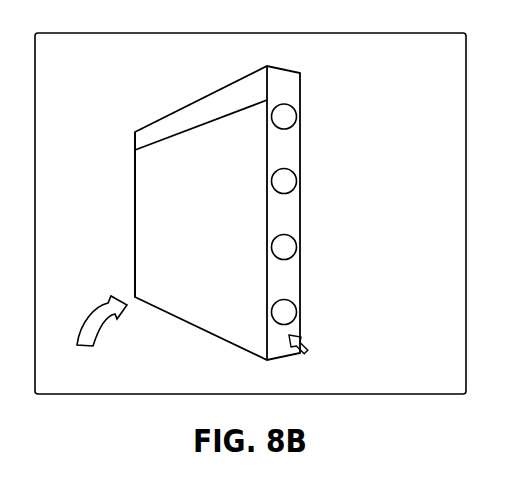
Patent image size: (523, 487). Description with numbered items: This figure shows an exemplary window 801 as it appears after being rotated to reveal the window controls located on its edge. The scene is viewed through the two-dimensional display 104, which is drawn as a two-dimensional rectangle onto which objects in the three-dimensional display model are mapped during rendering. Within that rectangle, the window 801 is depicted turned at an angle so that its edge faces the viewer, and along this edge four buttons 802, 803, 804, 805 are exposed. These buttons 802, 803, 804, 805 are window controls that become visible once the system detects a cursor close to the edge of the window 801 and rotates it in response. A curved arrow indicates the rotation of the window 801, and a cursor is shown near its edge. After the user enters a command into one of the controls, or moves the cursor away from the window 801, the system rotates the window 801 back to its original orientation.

The 2D display 104 is at (35, 33).
The window 801 is at (135, 130).
The button 802 is at (282, 118).
The button 803 is at (282, 183).
The button 804 is at (282, 249).
The button 805 is at (282, 314).